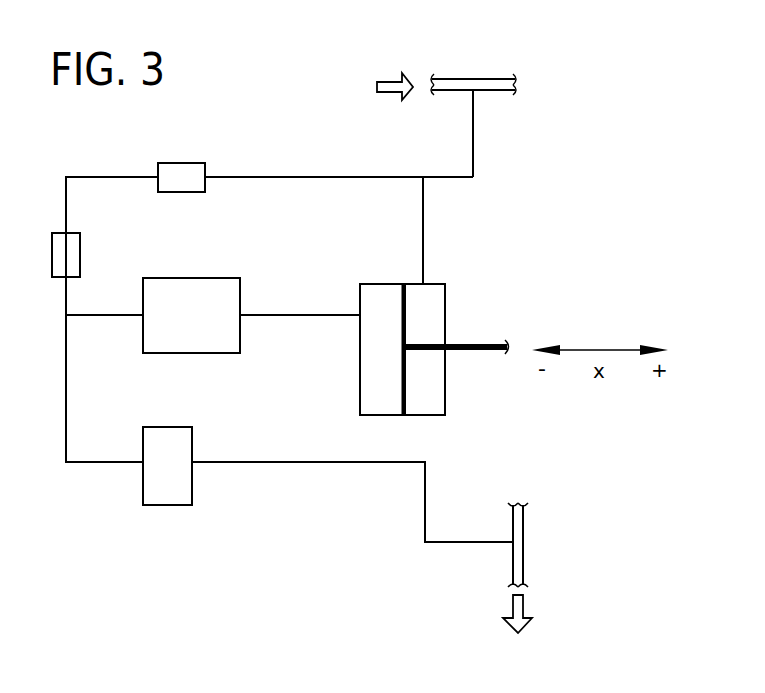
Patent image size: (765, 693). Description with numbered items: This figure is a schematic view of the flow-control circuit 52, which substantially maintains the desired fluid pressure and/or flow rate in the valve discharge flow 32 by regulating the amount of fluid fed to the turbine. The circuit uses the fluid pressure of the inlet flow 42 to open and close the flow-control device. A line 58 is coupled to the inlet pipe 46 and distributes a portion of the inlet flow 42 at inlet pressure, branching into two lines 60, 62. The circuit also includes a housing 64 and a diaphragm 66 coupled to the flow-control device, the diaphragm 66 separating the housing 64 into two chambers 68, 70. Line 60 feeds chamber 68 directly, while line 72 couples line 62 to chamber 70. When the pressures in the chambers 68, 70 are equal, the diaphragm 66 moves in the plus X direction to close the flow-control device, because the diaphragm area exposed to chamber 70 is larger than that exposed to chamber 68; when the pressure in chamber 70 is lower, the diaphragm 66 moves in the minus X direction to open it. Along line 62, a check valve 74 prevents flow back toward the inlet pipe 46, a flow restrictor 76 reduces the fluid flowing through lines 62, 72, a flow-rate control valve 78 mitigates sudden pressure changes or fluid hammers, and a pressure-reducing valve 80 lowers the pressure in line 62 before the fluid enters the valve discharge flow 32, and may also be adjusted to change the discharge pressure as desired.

The valve discharge flow 32 is at (512, 607).
The inlet flow 42 is at (388, 77).
The inlet pipe 46 is at (472, 79).
The flow-control circuit 52 is at (273, 118).
The line 58 is at (473, 135).
The line 60 is at (423, 236).
The line 62 is at (332, 177).
The housing 64 is at (360, 357).
The diaphragm 66 is at (405, 383).
The chamber 68 is at (437, 303).
The chamber 70 is at (385, 295).
The line 72 is at (300, 315).
The check valve 74 is at (183, 163).
The flow restrictor 76 is at (80, 255).
The flow-rate control valve 78 is at (192, 278).
The pressure-reducing valve 80 is at (178, 427).